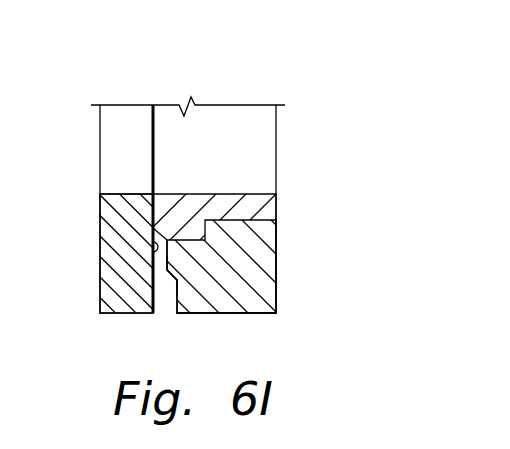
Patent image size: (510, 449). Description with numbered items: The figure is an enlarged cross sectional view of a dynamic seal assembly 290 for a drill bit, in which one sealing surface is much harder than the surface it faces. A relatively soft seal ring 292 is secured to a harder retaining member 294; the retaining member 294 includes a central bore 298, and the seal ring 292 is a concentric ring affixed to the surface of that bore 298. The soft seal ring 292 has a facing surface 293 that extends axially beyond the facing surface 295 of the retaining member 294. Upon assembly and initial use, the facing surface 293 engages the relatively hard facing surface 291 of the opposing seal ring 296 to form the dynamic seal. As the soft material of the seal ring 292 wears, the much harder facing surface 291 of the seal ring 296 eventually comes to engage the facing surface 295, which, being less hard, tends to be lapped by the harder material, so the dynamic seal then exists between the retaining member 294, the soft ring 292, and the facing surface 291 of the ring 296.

The seal assembly 290 is at (222, 63).
The facing surface 291 is at (152, 240).
The relatively soft seal ring 292 is at (265, 199).
The facing surface 293 is at (152, 215).
The retaining member 294 is at (267, 270).
The facing surface 295 is at (167, 268).
The seal ring 296 is at (105, 211).
The central bore 298 is at (252, 219).